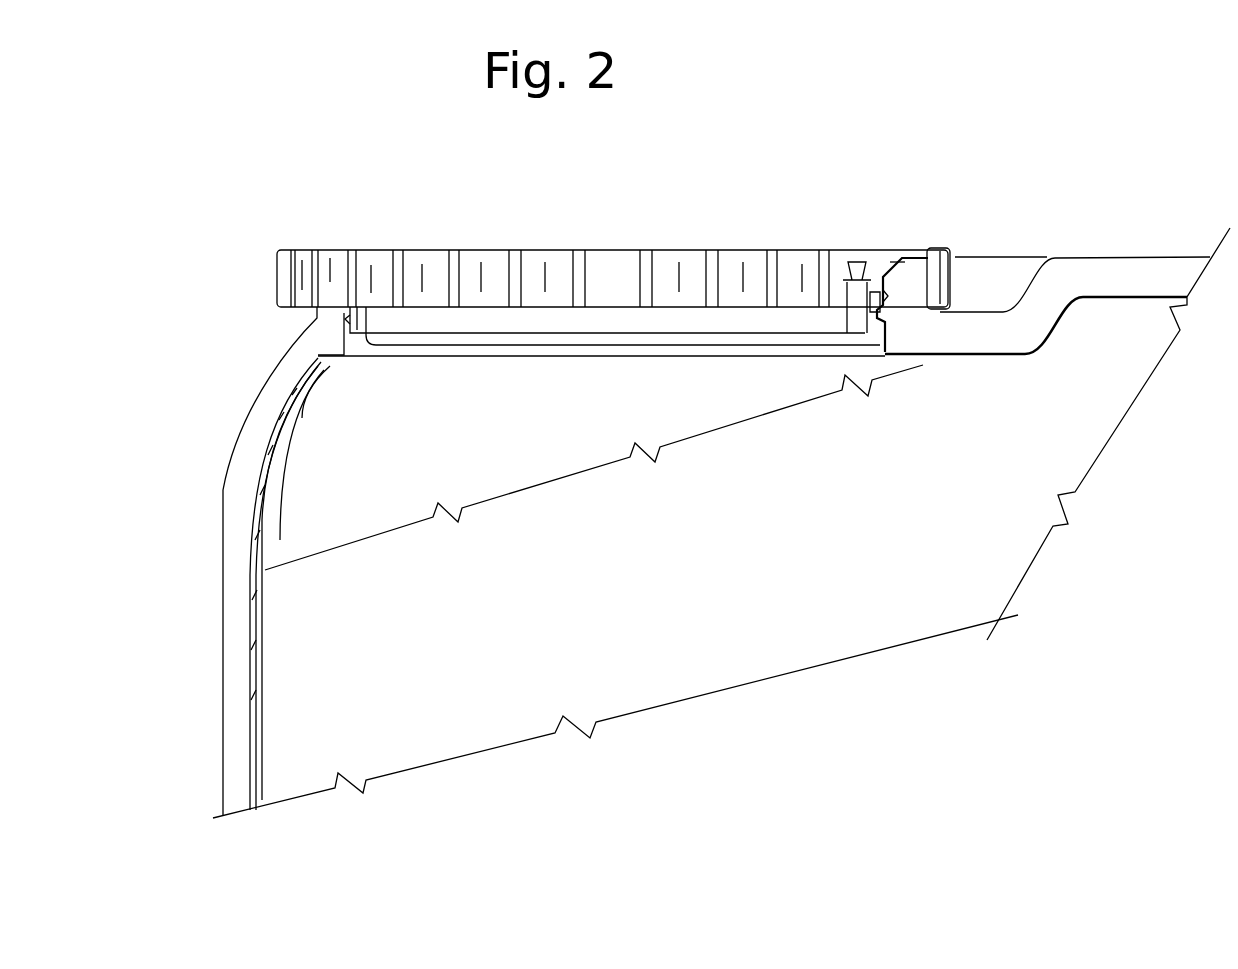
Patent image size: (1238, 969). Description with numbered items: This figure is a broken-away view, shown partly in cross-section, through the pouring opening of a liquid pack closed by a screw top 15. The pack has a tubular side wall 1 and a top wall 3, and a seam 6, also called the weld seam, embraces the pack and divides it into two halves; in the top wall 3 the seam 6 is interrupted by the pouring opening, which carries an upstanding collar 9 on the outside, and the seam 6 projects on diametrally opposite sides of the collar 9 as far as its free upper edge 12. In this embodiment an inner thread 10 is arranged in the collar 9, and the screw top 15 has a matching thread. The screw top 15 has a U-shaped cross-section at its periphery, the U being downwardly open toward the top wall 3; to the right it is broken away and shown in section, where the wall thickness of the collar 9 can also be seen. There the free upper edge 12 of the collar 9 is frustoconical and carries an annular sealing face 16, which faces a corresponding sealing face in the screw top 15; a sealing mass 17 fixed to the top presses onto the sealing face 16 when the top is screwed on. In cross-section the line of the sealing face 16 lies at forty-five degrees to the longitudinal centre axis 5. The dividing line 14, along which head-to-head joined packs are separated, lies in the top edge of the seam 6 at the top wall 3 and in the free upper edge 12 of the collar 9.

The side wall 1 is at (690, 678).
The top wall 3 is at (935, 362).
The longitudinal centre axis 5 is at (613, 370).
The seam 6 is at (232, 555).
The collar 9 is at (890, 293).
The inner thread 10 is at (347, 315).
The free upper edge 12 is at (912, 255).
The dividing line 14 is at (245, 262).
The screw top 15 is at (430, 270).
The sealing face 16 is at (897, 258).
The sealing mass 17 is at (877, 267).